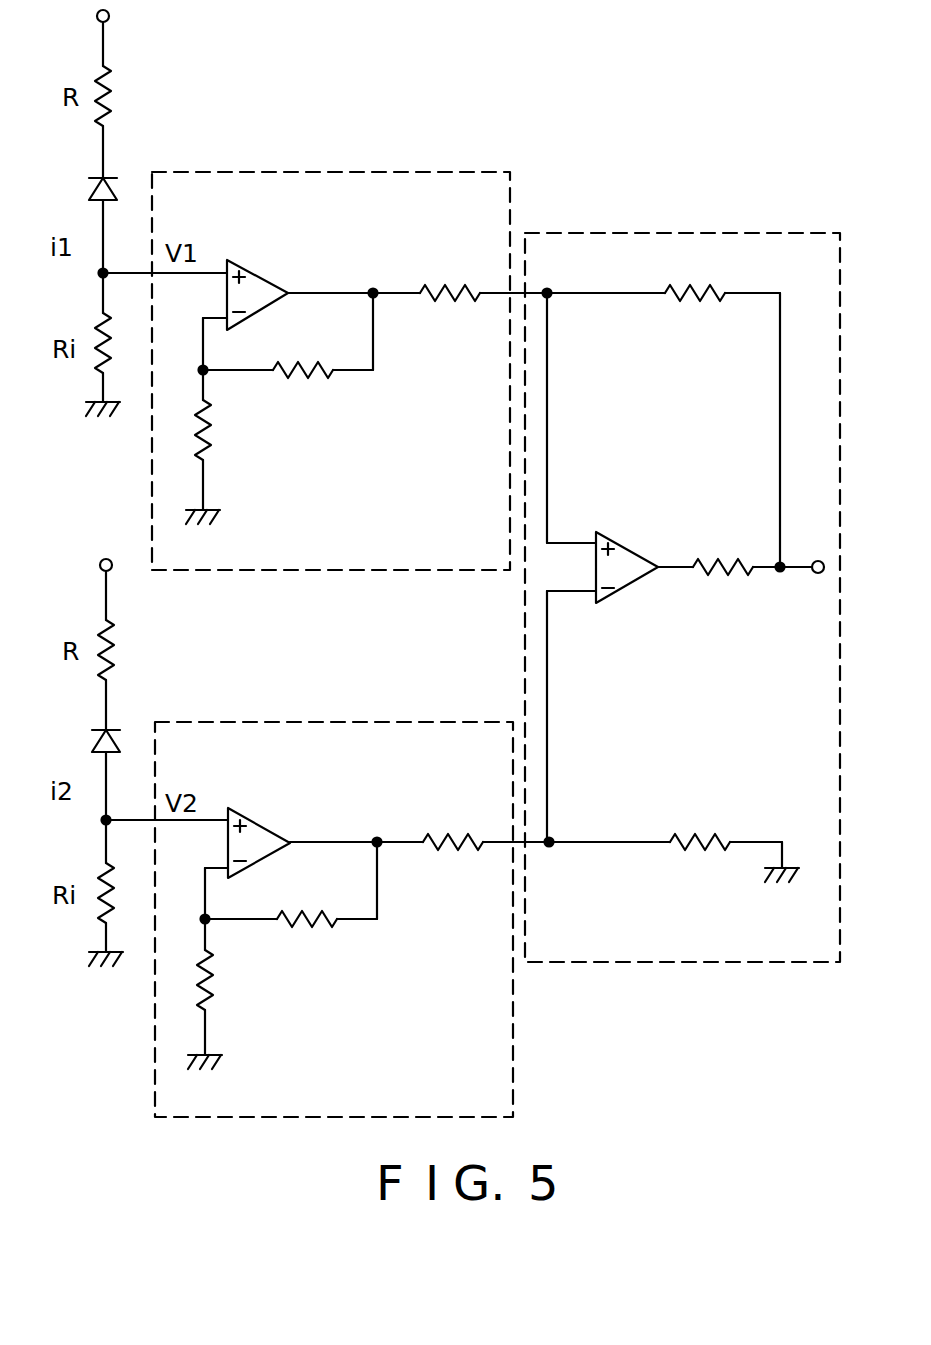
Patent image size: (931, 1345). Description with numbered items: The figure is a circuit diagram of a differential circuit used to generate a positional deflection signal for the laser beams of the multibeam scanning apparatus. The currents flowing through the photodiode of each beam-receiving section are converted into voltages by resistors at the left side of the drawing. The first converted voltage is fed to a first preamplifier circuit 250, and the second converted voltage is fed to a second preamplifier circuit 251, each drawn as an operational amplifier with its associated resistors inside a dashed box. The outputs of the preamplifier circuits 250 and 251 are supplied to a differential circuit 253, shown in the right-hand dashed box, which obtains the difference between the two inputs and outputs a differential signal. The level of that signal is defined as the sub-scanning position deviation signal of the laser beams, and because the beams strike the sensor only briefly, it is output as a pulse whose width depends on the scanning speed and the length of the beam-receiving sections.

The preamplifier circuit 250 is at (328, 172).
The preamplifier circuit 251 is at (320, 722).
The differential circuit 253 is at (608, 232).